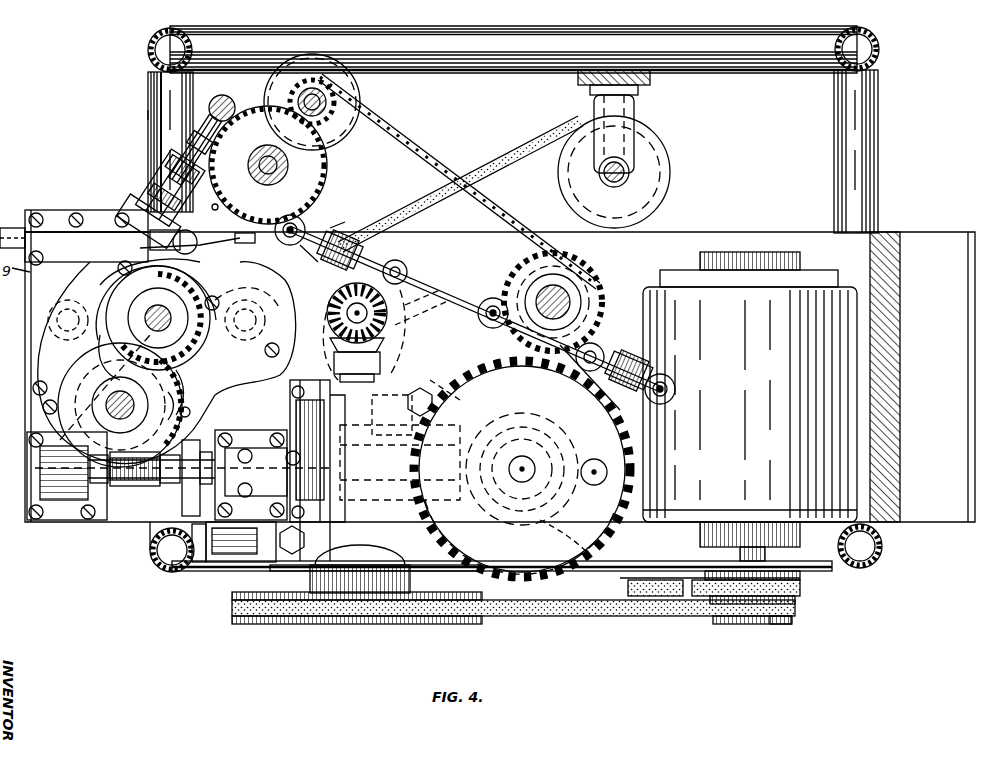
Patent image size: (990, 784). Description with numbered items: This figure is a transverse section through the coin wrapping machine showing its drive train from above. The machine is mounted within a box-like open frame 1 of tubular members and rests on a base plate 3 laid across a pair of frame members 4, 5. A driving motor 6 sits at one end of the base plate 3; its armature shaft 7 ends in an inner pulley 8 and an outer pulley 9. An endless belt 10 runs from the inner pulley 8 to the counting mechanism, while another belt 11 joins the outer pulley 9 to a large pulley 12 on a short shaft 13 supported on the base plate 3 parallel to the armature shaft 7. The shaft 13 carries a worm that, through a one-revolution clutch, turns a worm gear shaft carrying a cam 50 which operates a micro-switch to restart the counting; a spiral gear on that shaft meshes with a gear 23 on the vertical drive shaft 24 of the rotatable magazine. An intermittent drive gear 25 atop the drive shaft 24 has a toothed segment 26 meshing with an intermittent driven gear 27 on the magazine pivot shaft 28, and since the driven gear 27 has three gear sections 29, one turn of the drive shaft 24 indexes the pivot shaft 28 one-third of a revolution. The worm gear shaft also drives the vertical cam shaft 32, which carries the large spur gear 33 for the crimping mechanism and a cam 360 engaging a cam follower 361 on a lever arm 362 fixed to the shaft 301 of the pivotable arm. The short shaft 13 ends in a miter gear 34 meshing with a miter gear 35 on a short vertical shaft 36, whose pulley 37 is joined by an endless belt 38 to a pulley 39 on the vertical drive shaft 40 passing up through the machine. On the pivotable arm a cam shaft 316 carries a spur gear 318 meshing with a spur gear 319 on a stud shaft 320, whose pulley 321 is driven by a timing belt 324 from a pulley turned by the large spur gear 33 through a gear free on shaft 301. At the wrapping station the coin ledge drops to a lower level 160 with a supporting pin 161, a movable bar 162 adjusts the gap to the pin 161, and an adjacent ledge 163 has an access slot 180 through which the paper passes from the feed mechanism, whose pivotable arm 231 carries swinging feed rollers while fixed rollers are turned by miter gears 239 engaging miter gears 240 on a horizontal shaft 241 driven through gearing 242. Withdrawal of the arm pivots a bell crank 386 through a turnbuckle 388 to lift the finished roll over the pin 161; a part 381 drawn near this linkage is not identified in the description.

The open frame 1 is at (872, 556).
The base plate 3 is at (755, 238).
The frame member 4 is at (878, 113).
The frame member 5 is at (138, 109).
The driving motor 6 is at (750, 406).
The armature shaft 7 is at (748, 626).
The inner pulley 8 is at (800, 590).
The outer pulley 9 is at (775, 628).
The endless belt 10 is at (632, 586).
The belt 11 is at (580, 608).
The large pulley 12 is at (268, 624).
The short shaft 13 is at (360, 626).
The gear 23 is at (182, 408).
The drive shaft 24 is at (134, 405).
The intermittent drive gear 25 is at (190, 414).
The segment 26 is at (180, 445).
The intermittent driven gear 27 is at (190, 372).
The pivot shaft 28 is at (150, 336).
The gear sections 29 is at (130, 320).
The cam shaft 32 is at (528, 454).
The large spur gear 33 is at (488, 368).
The miter gear 34 is at (330, 362).
The miter gear 35 is at (360, 329).
The short vertical shaft 36 is at (380, 318).
The pulley 37 is at (423, 307).
The endless belt 38 is at (530, 140).
The pulley 39 is at (670, 172).
The vertical drive shaft 40 is at (598, 170).
The cam 50 is at (184, 500).
The lower level 160 is at (270, 230).
The supporting pin 161 is at (178, 252).
The movable bar 162 is at (112, 235).
The ledge 163 is at (335, 266).
The access slot 180 is at (280, 300).
The arm 231 is at (385, 258).
The miter gears 239 is at (341, 208).
The miter gears 240 is at (338, 224).
The horizontal shaft 241 is at (484, 296).
The gearing 242 is at (676, 389).
The shaft 301 is at (565, 292).
The cam shaft 316 is at (250, 152).
The spur gear 318 is at (322, 162).
The spur gear 319 is at (330, 118).
The stud shaft 320 is at (335, 93).
The pulley 321 is at (278, 90).
The timing belt 324 is at (436, 118).
The cam 360 is at (565, 537).
The cam follower 361 is at (596, 488).
The lever arm 362 is at (590, 377).
The link 381 is at (130, 250).
The bell crank 386 is at (160, 210).
The turnbuckle 388 is at (205, 126).